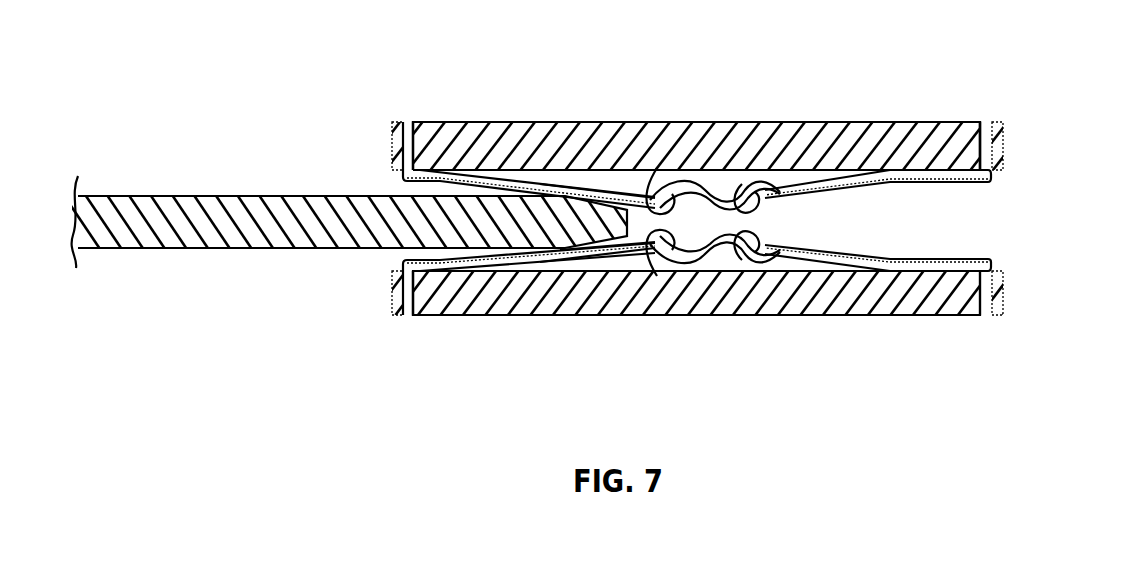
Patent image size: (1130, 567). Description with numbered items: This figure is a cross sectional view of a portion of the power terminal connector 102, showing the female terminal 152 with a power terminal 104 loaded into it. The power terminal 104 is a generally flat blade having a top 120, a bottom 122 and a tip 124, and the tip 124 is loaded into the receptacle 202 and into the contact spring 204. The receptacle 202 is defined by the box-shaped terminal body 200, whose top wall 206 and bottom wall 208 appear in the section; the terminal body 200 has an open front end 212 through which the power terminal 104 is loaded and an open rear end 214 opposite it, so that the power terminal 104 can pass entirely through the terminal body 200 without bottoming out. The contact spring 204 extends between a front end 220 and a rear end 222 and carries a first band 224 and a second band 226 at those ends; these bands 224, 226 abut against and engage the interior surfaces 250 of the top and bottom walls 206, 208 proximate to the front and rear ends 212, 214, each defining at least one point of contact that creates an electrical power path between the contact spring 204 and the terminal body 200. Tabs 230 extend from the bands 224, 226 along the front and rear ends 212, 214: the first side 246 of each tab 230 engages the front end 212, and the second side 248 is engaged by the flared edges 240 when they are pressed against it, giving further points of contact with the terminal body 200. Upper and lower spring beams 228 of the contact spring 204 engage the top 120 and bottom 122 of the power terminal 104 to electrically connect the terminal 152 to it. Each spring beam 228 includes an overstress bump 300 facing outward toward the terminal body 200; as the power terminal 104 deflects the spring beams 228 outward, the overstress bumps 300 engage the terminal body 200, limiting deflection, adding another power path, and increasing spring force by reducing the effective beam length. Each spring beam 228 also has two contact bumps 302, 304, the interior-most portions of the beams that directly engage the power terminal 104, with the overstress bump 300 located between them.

The power terminal connector 102 is at (686, 220).
The power terminal 104 is at (363, 224).
The top 120 is at (432, 170).
The bottom 122 is at (300, 281).
The tip 124 is at (607, 312).
The female terminal 152 is at (446, 109).
The terminal body 200 is at (696, 325).
The receptacle 202 is at (665, 211).
The contact spring 204 is at (918, 252).
The top wall 206 is at (800, 101).
The bottom wall 208 is at (800, 367).
The open front end 212 is at (377, 340).
The open rear end 214 is at (1024, 111).
The front end 220 is at (470, 151).
The rear end 222 is at (924, 180).
The first band 224 is at (696, 109).
The second band 226 is at (987, 99).
The spring beam 228 is at (699, 220).
The tab 230 is at (732, 201).
The flared edge 240 is at (653, 219).
The first side 246 is at (537, 318).
The second side 248 is at (440, 296).
The interior surfaces 250 is at (587, 221).
The overstress bump 300 is at (715, 204).
The contact bump 302 is at (661, 236).
The contact bump 304 is at (817, 172).